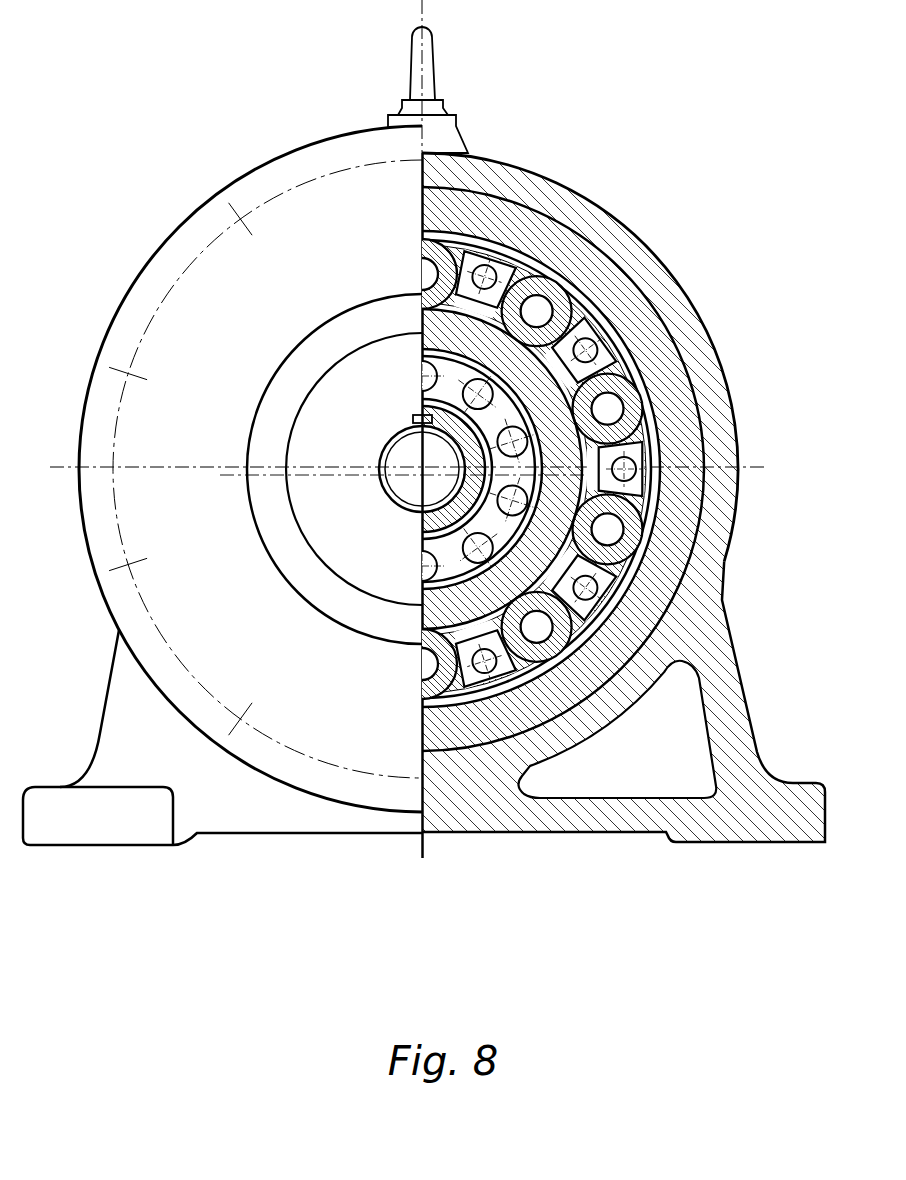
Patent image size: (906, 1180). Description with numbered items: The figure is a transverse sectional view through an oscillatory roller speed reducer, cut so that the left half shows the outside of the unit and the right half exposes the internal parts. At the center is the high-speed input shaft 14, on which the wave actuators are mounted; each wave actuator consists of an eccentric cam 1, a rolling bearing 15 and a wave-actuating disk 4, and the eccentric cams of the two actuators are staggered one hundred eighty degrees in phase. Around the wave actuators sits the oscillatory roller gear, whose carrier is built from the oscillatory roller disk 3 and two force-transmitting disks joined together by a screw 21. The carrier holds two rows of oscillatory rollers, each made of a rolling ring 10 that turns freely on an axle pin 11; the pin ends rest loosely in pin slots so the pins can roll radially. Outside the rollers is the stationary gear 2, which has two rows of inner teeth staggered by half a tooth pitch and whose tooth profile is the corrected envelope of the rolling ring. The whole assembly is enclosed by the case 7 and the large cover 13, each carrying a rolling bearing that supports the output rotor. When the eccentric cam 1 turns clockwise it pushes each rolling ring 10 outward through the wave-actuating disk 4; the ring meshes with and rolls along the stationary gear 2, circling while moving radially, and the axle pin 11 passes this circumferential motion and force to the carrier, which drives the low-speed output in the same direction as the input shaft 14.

The eccentric cam 1 is at (460, 515).
The stationary gear 2 is at (443, 212).
The oscillatory roller disk 3 is at (474, 258).
The wave-actuating disk 4 is at (520, 372).
The case 7 is at (640, 268).
The rolling ring 10 is at (572, 645).
The axle pin 11 is at (542, 683).
The large cover 13 is at (195, 312).
The high-speed input shaft 14 is at (424, 478).
The rolling bearing 15 is at (487, 560).
The screw 21 is at (598, 590).